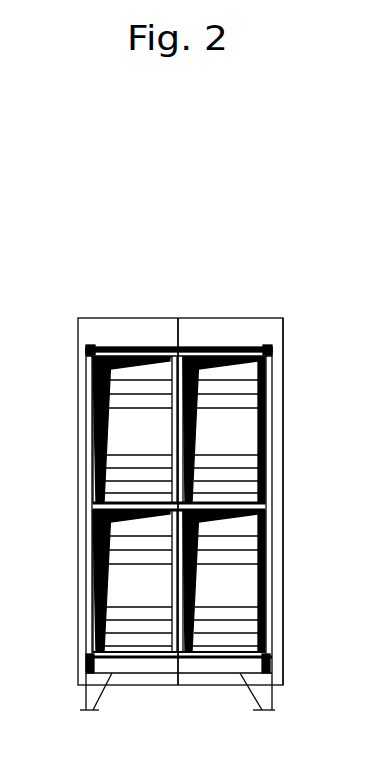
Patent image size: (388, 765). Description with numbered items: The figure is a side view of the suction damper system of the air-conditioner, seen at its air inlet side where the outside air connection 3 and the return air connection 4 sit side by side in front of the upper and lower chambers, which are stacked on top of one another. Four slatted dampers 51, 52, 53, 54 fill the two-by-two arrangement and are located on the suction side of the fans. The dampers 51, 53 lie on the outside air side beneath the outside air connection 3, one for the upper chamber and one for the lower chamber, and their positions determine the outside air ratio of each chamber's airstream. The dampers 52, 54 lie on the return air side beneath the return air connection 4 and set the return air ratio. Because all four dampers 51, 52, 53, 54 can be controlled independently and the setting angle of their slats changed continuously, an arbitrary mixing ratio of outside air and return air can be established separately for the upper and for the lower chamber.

The outside air connection 3 is at (127, 333).
The return air connection 4 is at (232, 332).
The damper 51 is at (128, 416).
The damper 52 is at (230, 398).
The damper 53 is at (128, 606).
The damper 54 is at (248, 603).